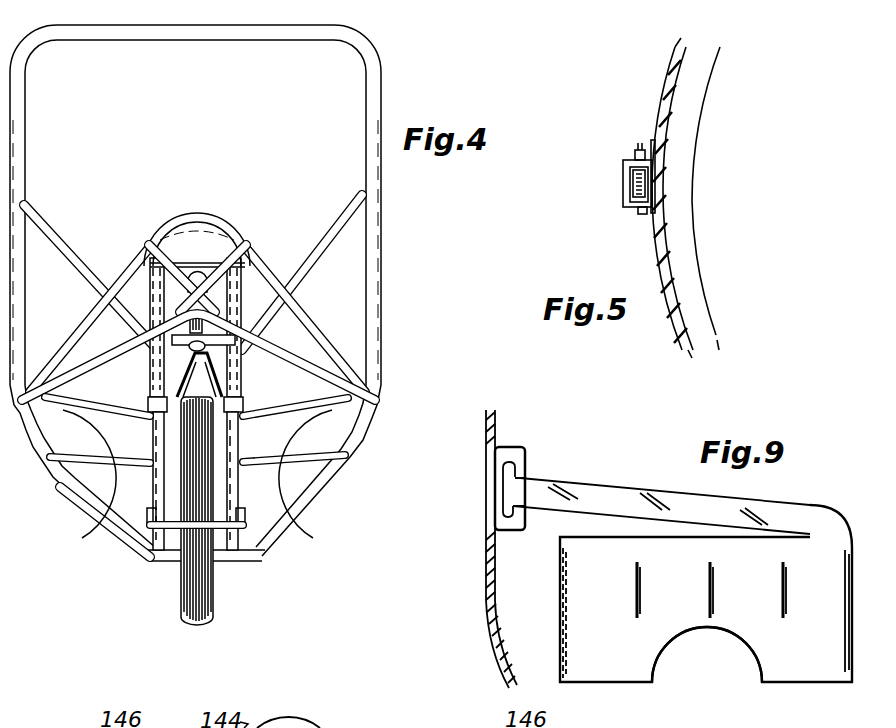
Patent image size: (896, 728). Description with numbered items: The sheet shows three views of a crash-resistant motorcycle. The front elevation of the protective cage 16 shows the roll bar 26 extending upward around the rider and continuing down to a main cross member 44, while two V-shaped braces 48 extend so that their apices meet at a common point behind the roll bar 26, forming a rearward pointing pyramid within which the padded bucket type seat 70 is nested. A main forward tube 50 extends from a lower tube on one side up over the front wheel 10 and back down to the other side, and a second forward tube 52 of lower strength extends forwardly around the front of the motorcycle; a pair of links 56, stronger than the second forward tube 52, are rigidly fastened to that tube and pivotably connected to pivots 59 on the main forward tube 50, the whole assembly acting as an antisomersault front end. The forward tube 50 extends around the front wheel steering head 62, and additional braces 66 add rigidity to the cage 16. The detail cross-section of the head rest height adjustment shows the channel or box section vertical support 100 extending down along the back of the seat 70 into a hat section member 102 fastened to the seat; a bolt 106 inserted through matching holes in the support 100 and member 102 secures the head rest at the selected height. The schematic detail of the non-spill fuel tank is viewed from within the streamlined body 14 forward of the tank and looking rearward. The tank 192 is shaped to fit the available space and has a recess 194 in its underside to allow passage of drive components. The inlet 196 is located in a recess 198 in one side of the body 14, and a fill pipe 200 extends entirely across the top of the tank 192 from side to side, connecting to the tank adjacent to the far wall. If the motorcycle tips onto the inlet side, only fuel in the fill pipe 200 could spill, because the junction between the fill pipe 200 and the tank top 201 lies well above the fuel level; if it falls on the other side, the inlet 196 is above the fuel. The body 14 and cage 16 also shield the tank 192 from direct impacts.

In FIG. 4, the wheels 10 is at (217, 605).
In FIG. 4, the cage-like structure 16 is at (195, 473).
In FIG. 4, the roll bar 26 is at (208, 33).
In FIG. 4, the main cross member 44 is at (306, 527).
In FIG. 4, the V-shaped braces 48 is at (85, 272).
In FIG. 4, the main forward tube 50 is at (96, 318).
In FIG. 4, the second forward tube 52 is at (300, 338).
In FIG. 4, the links 56 is at (170, 280).
In FIG. 4, the pivots 59 is at (162, 237).
In FIG. 4, the front wheel steering head 62 is at (290, 325).
In FIG. 4, the braces 66 is at (292, 452).
In FIG. 5, the padded bucket type seat 70 is at (670, 302).
In FIG. 5, the vertical support 100 is at (630, 186).
In FIG. 5, the hat section member 102 is at (645, 140).
In FIG. 5, the bolt 106 is at (640, 213).
In FIG. 9, the streamlined body 14 is at (488, 655).
In FIG. 9, the tank 192 is at (842, 598).
In FIG. 9, the recess 194 is at (664, 660).
In FIG. 9, the inlet 196 is at (500, 490).
In FIG. 9, the recess 198 is at (507, 447).
In FIG. 9, the fill pipe 200 is at (628, 492).
In FIG. 9, the tank top 201 is at (587, 530).